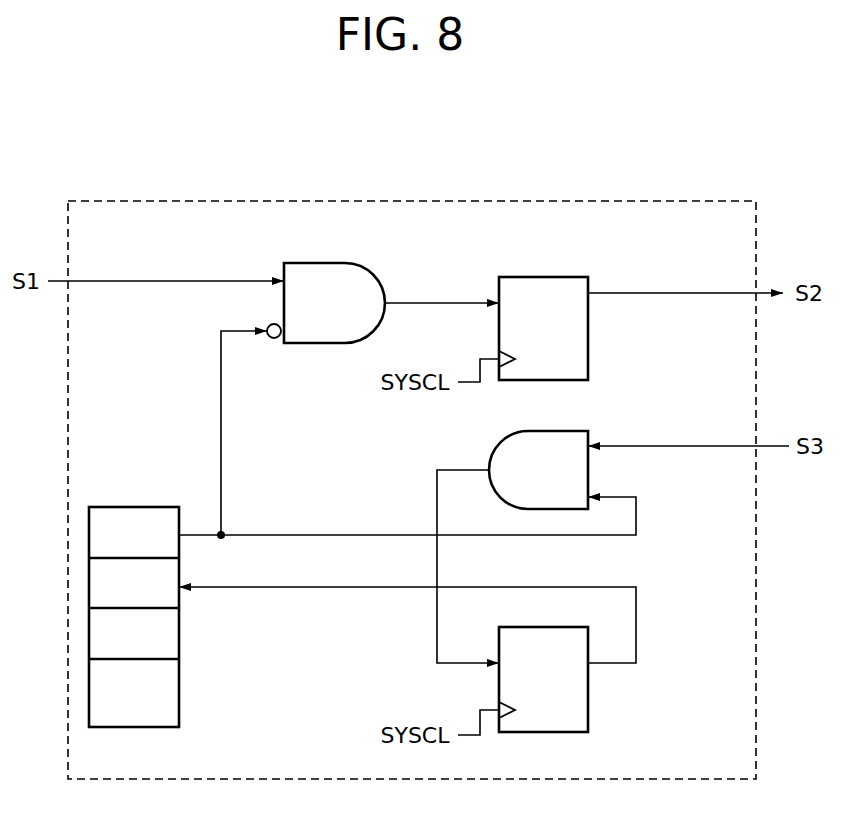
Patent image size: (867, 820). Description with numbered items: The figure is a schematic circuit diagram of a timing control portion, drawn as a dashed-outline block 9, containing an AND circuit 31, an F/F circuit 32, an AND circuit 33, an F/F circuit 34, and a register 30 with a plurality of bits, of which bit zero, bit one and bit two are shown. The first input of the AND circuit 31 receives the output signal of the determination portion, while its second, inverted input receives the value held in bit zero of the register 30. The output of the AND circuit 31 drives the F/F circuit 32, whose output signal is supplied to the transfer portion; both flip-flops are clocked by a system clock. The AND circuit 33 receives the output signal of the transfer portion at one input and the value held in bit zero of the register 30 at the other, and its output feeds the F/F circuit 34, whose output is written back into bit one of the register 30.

The signal processing circuit 9 is at (399, 201).
The register 30 is at (179, 695).
The AND circuit 31 is at (325, 263).
The F/F circuit 32 is at (544, 277).
The AND circuit 33 is at (492, 454).
The F/F circuit 34 is at (588, 705).